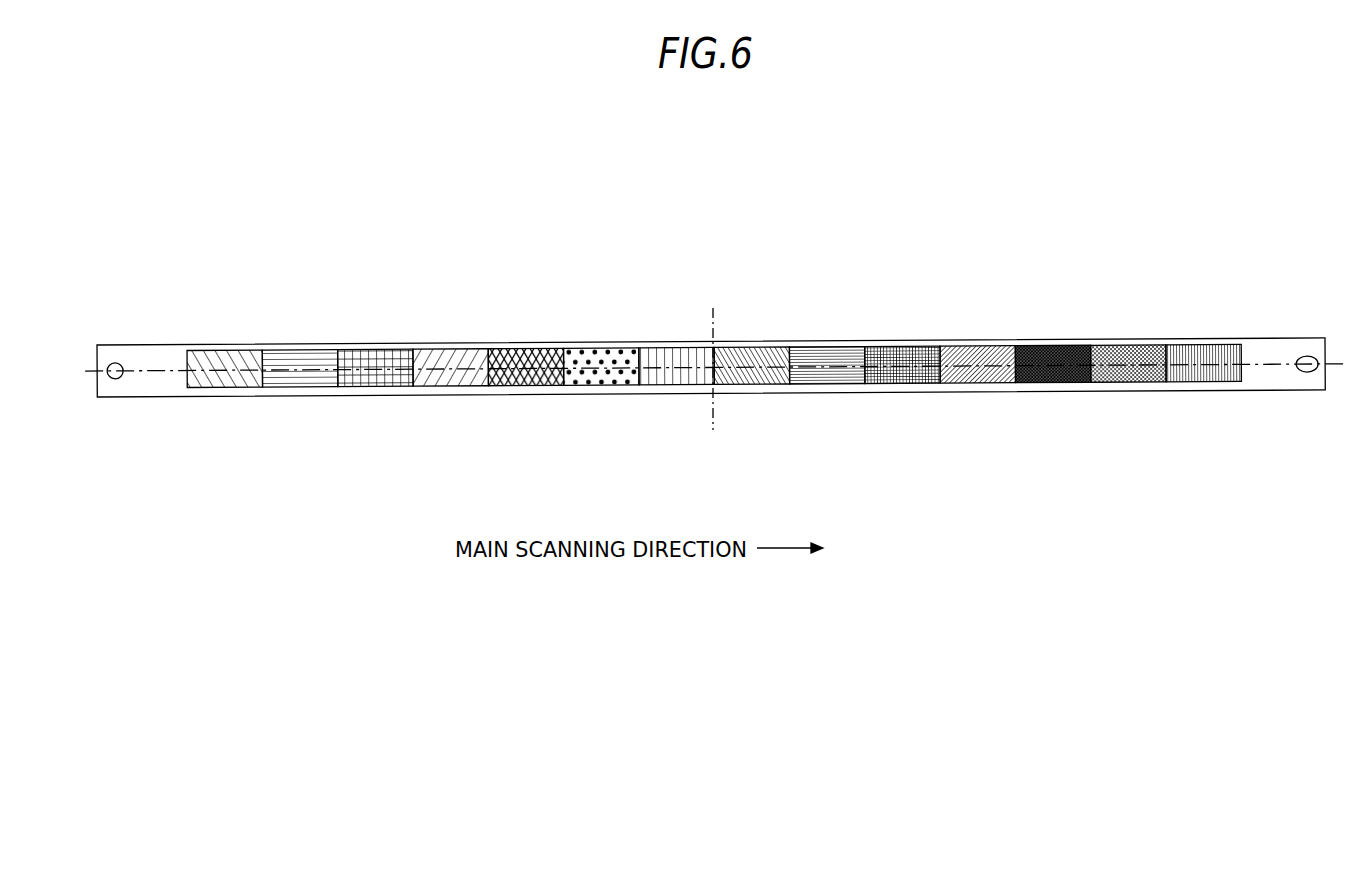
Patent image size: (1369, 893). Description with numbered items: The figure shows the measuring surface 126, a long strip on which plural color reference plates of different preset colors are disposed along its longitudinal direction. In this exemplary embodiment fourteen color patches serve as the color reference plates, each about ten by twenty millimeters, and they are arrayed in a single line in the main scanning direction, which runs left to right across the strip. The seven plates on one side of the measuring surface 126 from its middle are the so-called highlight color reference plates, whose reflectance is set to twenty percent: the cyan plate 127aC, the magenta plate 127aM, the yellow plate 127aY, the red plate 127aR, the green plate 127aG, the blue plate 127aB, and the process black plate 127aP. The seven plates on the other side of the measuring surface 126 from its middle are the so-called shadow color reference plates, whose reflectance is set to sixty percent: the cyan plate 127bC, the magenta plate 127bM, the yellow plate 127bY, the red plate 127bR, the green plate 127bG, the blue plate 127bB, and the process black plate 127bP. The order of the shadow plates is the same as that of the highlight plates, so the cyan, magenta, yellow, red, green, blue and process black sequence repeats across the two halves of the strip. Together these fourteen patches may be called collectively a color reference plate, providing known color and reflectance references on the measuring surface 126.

The measuring surface 126 is at (745, 270).
The highlight cyan color reference plate 127aC is at (230, 389).
The highlight magenta color reference plate 127aM is at (302, 389).
The highlight yellow color reference plate 127aY is at (377, 389).
The highlight red color reference plate 127aR is at (452, 388).
The highlight green color reference plate 127aG is at (528, 388).
The highlight blue color reference plate 127aB is at (602, 388).
The highlight process black color reference plate 127aP is at (680, 388).
The shadow cyan color reference plate 127bC is at (750, 388).
The shadow magenta color reference plate 127bM is at (828, 387).
The shadow yellow color reference plate 127bY is at (902, 387).
The shadow red color reference plate 127bR is at (978, 387).
The shadow green color reference plate 127bG is at (1050, 387).
The shadow blue color reference plate 127bB is at (1130, 386).
The shadow process black color reference plate 127bP is at (1203, 386).